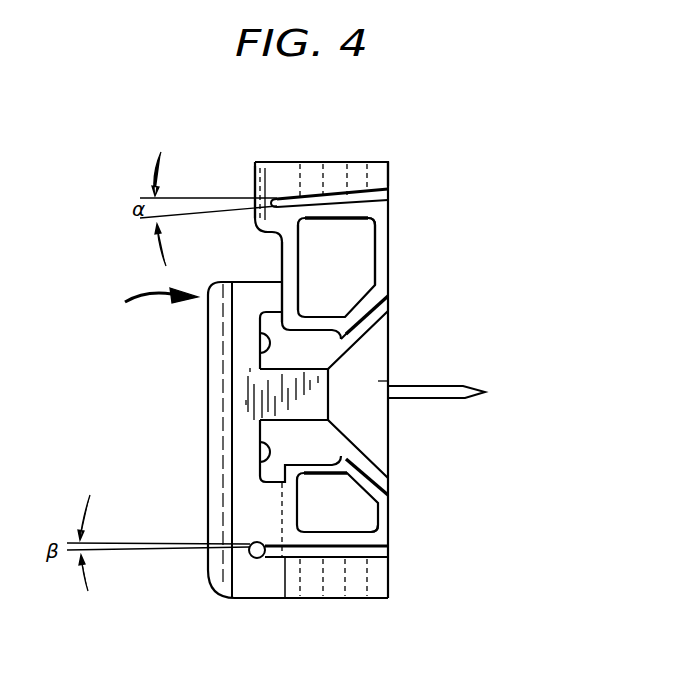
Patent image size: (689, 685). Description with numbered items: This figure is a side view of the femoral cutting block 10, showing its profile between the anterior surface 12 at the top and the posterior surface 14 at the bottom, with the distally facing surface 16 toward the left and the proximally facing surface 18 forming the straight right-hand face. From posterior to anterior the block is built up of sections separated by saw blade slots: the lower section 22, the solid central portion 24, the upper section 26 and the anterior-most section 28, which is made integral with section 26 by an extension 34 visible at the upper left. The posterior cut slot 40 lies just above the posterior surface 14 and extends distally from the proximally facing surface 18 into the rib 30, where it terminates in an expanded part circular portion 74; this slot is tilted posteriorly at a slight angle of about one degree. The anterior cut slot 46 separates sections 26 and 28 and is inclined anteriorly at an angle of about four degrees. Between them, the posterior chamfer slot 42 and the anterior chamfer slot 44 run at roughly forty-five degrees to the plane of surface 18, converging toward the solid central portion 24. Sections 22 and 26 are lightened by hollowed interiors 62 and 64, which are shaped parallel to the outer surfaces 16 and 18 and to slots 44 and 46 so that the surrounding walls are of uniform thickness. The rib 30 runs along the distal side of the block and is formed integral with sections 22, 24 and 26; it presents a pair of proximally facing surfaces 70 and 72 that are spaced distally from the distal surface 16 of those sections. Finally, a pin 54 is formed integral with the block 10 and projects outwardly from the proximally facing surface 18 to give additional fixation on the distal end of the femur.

The cutting block 10 is at (147, 302).
The anterior surface 12 is at (330, 160).
The posterior surface 14 is at (386, 599).
The distal surface 16 is at (283, 258).
The proximally facing surface 18 is at (388, 350).
The section 22 is at (390, 513).
The central portion 24 is at (380, 381).
The section 26 is at (388, 242).
The section 28 is at (380, 168).
The rib 30 is at (216, 415).
The extension 34 is at (253, 178).
The saw blade slot 40 is at (385, 558).
The saw blade slot 42 is at (386, 484).
The saw blade slot 44 is at (386, 299).
The saw blade slot 46 is at (383, 192).
The pin 54 is at (462, 392).
The hollowed interior 62 is at (364, 527).
The hollowed interior 64 is at (360, 237).
The proximally facing surface 70 is at (259, 352).
The proximally facing surface 72 is at (262, 463).
The expanded part circular portion 74 is at (248, 558).